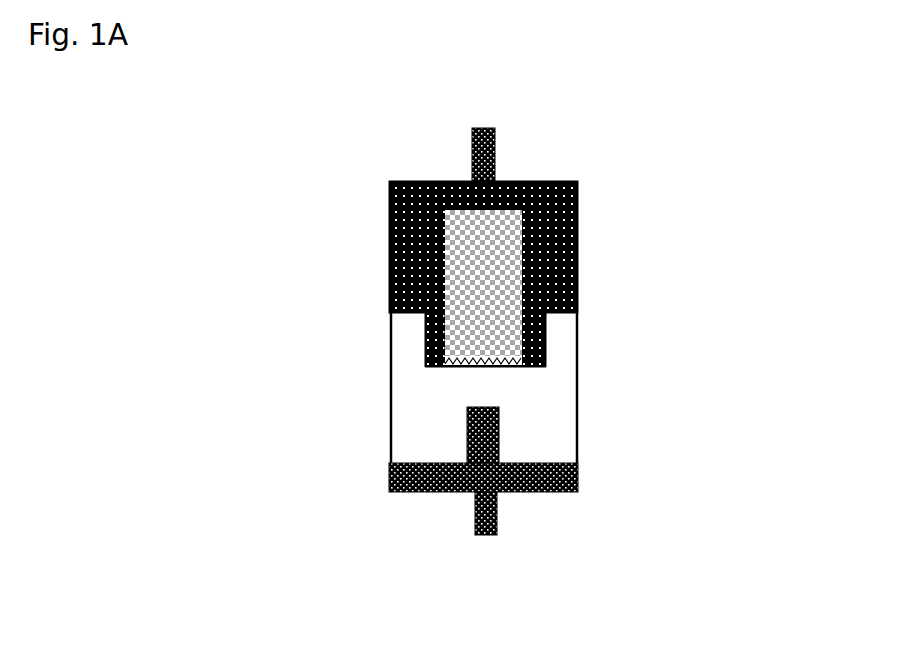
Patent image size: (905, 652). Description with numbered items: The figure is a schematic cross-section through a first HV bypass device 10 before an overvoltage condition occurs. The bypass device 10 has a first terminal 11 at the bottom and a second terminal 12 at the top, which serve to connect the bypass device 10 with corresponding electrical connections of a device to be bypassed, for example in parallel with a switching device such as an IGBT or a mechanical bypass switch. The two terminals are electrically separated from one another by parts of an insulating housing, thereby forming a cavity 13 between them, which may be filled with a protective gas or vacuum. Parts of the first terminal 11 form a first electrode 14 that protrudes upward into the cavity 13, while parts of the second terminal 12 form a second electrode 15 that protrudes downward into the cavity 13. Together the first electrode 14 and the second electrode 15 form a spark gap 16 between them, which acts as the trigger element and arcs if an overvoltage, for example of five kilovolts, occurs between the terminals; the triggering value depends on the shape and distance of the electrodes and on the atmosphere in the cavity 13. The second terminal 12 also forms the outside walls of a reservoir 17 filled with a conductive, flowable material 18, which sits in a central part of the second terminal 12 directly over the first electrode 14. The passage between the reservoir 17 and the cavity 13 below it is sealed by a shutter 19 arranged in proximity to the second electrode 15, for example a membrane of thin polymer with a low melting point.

The bypass device 10 is at (677, 88).
The first terminal 11 is at (475, 528).
The second terminal 12 is at (468, 143).
The cavity 13 is at (545, 432).
The first electrode 14 is at (467, 433).
The second electrode 15 is at (425, 339).
The spark gap 16 is at (508, 390).
The reservoir 17 is at (389, 250).
The conductive, flowable material 18 is at (490, 243).
The shutter 19 is at (505, 361).